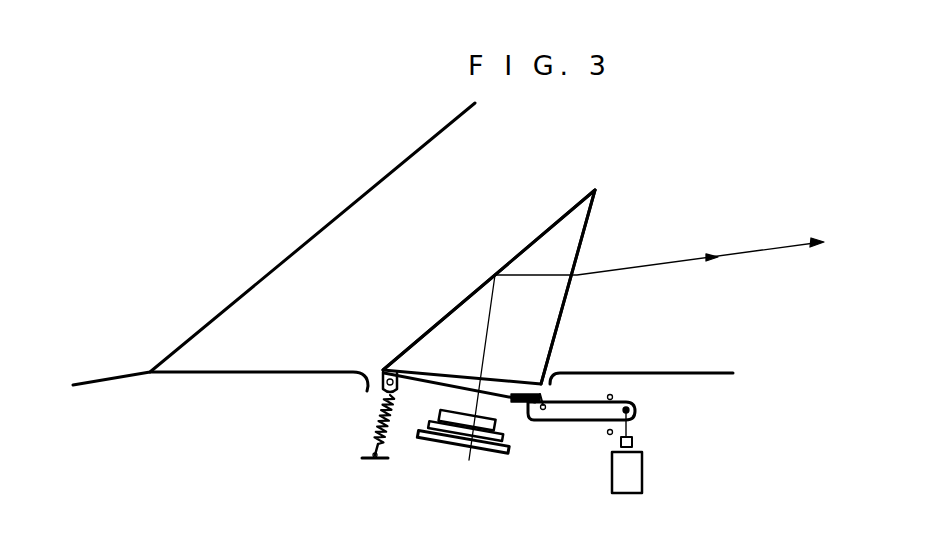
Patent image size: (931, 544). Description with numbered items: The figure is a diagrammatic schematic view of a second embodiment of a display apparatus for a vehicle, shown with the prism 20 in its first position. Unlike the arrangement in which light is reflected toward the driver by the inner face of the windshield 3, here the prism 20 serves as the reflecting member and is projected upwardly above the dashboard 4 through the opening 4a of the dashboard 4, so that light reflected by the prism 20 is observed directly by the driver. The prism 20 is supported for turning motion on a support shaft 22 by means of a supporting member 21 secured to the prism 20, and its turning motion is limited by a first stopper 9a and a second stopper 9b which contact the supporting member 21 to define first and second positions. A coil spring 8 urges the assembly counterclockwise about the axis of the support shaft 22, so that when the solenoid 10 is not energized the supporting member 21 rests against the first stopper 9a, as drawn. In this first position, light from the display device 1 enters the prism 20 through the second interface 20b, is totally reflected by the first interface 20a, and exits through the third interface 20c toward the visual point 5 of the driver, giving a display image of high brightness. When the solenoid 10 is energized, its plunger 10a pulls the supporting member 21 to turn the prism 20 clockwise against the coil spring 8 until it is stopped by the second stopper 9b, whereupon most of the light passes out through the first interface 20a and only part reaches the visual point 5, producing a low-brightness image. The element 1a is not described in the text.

The display device 1 is at (469, 460).
The base plate 1a is at (497, 418).
The windshield 3 is at (343, 208).
The dashboard 4 is at (707, 383).
The opening of the dashboard 4a is at (372, 374).
The visual point 5 is at (822, 238).
The coil spring 8 is at (378, 422).
The first stopper 9a is at (612, 397).
The second stopper 9b is at (607, 435).
The solenoid 10 is at (627, 482).
The plunger 10a is at (633, 441).
The prism 20 is at (560, 240).
The first interface 20a is at (520, 252).
The second interface 20b is at (423, 387).
The third interface 20c is at (567, 300).
The supporting member 21 is at (572, 408).
The support shaft 22 is at (543, 423).